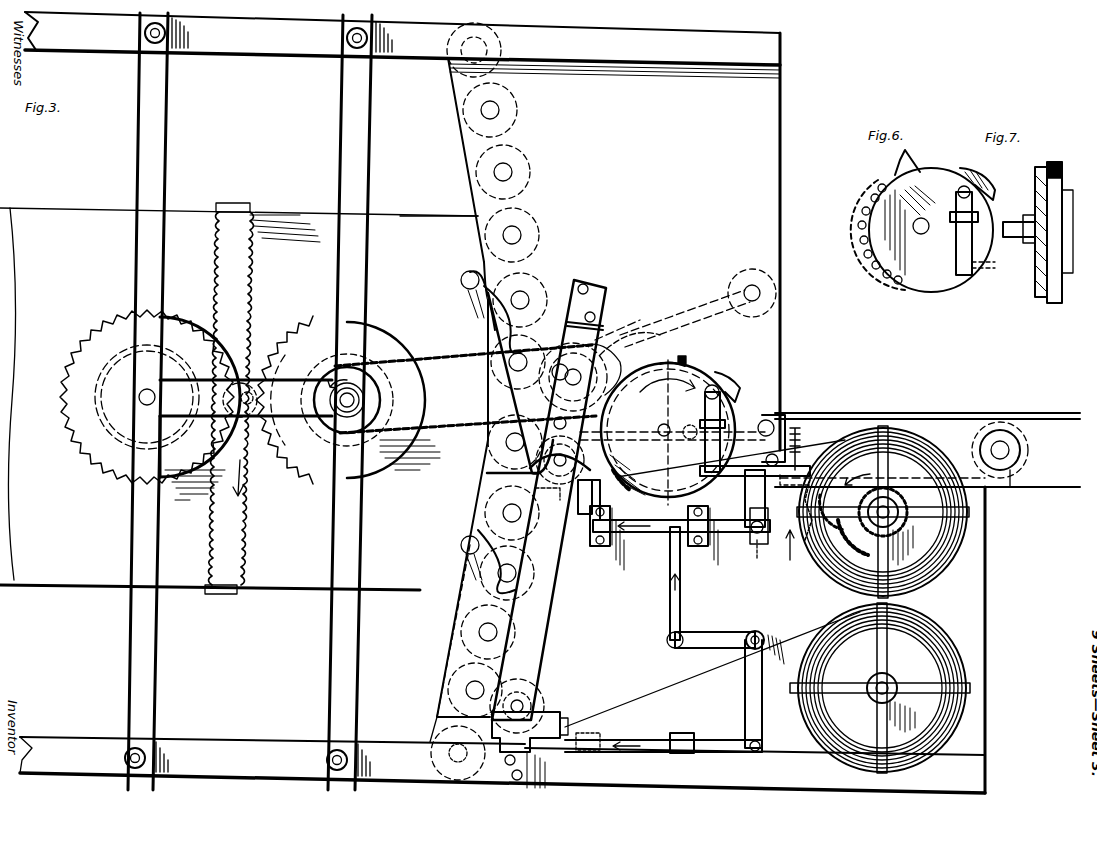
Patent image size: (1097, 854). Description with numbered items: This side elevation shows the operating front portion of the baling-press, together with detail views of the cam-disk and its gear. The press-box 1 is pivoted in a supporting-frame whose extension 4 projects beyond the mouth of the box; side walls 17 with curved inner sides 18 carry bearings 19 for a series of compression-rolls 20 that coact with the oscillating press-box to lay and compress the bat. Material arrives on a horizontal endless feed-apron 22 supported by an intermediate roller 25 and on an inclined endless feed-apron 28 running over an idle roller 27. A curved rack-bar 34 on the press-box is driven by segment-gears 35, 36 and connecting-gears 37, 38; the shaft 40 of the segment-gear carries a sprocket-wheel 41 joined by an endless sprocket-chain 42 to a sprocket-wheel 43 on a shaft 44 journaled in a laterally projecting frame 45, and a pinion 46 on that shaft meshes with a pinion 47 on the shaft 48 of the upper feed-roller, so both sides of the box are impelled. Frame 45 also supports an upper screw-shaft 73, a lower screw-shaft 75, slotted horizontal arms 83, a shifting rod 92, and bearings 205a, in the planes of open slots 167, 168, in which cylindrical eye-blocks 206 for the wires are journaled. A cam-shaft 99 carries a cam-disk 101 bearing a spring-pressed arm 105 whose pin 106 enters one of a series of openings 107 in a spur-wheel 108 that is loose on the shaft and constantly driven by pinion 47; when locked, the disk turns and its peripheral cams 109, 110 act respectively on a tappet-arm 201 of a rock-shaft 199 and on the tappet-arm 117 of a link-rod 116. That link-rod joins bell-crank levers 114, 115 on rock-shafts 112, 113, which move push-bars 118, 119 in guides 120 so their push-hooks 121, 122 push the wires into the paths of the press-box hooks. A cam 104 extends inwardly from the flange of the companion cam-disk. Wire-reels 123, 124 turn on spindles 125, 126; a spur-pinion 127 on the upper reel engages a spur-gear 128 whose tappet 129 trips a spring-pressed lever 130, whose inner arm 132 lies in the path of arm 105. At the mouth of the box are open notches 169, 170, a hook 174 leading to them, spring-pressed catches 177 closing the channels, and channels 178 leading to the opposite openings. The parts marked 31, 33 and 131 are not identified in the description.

In FIG. 3, the press-box 1 is at (492, 402).
In FIG. 3, the extension 4 is at (466, 30).
In FIG. 3, the side walls 17 is at (633, 160).
In FIG. 3, the curved inner sides 18 is at (452, 96).
In FIG. 3, the bearings 19 is at (500, 110).
In FIG. 3, the compression-rolls 20 is at (532, 172).
In FIG. 3, the endless feed-apron 22 is at (918, 414).
In FIG. 3, the intermediate roller 25 is at (1010, 430).
In FIG. 3, the idle roller 27 is at (745, 280).
In FIG. 3, the inclined endless feed-apron 28 is at (708, 296).
In FIG. 3, the frame beam 31 is at (66, 210).
In FIG. 3, the disc 33 is at (172, 350).
In FIG. 3, the curved rack-bar 34 is at (252, 286).
In FIG. 3, the segment-gear 35 is at (312, 338).
In FIG. 3, the segment-gear 36 is at (60, 430).
In FIG. 3, the connecting-gear 37 is at (372, 358).
In FIG. 3, the connecting-gear 38 is at (253, 434).
In FIG. 3, the shaft 40 is at (338, 415).
In FIG. 3, the sprocket-wheel 41 is at (380, 398).
In FIG. 3, the endless sprocket-chain 42 is at (465, 389).
In FIG. 3, the sprocket-wheel 43 is at (560, 352).
In FIG. 3, the shaft 44 is at (552, 398).
In FIG. 3, the frame 45 is at (548, 596).
In FIG. 3, the pinion 46 is at (548, 374).
In FIG. 3, the pinion 47 is at (630, 355).
In FIG. 3, the shaft 48 is at (610, 330).
In FIG. 3, the screw-shaft 73 is at (546, 490).
In FIG. 3, the screw-shaft 75 is at (518, 700).
In FIG. 3, the arms 83 is at (478, 774).
In FIG. 3, the shifting rod 92 is at (528, 450).
In FIG. 3, the cam-shaft 99 is at (666, 436).
In FIG. 6, the cam-shaft 99 is at (924, 234).
In FIG. 7, the cam-shaft 99 is at (1012, 240).
In FIG. 3, the cam-disk 101 is at (672, 432).
In FIG. 6, the cam-disk 101 is at (931, 221).
In FIG. 7, the cam-disk 101 is at (1040, 298).
In FIG. 6, the cam 104 is at (890, 285).
In FIG. 3, the spring-pressed arm 105 is at (700, 425).
In FIG. 6, the spring-pressed arm 105 is at (958, 240).
In FIG. 7, the spring-pressed arm 105 is at (1058, 300).
In FIG. 3, the pin 106 is at (718, 385).
In FIG. 6, the pin 106 is at (960, 190).
In FIG. 7, the pin 106 is at (1062, 185).
In FIG. 6, the openings 107 is at (855, 214).
In FIG. 7, the openings 107 is at (1035, 196).
In FIG. 3, the spur-wheel 108 is at (688, 352).
In FIG. 6, the spur-wheel 108 is at (870, 262).
In FIG. 7, the spur-wheel 108 is at (1035, 278).
In FIG. 3, the cam 109 is at (680, 345).
In FIG. 6, the cam 109 is at (895, 162).
In FIG. 3, the cam 110 is at (740, 398).
In FIG. 6, the cam 110 is at (992, 172).
In FIG. 3, the rock-shaft 112 is at (790, 406).
In FIG. 3, the rock-shaft 113 is at (754, 630).
In FIG. 3, the bell-crank lever 114 is at (768, 420).
In FIG. 3, the bell-crank lever 115 is at (715, 640).
In FIG. 3, the link-rod 116 is at (682, 565).
In FIG. 3, the tappet-arm 117 is at (684, 356).
In FIG. 3, the push-bar 118 is at (650, 540).
In FIG. 3, the push-bar 119 is at (662, 742).
In FIG. 3, the guides 120 is at (700, 766).
In FIG. 3, the push-hook 121 is at (596, 535).
In FIG. 3, the push-hook 122 is at (540, 715).
In FIG. 3, the wire-reel 123 is at (945, 560).
In FIG. 3, the wire-reel 124 is at (950, 650).
In FIG. 3, the spindle 125 is at (905, 506).
In FIG. 3, the spindle 126 is at (895, 680).
In FIG. 3, the spur-pinion 127 is at (872, 538).
In FIG. 3, the spur-gear 128 is at (790, 520).
In FIG. 3, the tappet 129 is at (840, 505).
In FIG. 3, the spring-pressed lever 130 is at (800, 445).
In FIG. 3, the link 131 is at (757, 560).
In FIG. 3, the inner arm 132 is at (718, 480).
In FIG. 3, the open slot 167 is at (487, 478).
In FIG. 3, the open slot 168 is at (440, 720).
In FIG. 3, the open notch 169 is at (470, 272).
In FIG. 3, the open notch 170 is at (460, 538).
In FIG. 3, the hook 174 is at (524, 548).
In FIG. 3, the spring-pressed catches 177 is at (462, 280).
In FIG. 3, the channels 178 is at (528, 270).
In FIG. 3, the rock-shaft 199 is at (545, 427).
In FIG. 3, the tappet-arm 201 is at (659, 430).
In FIG. 3, the bearings 205a is at (548, 745).
In FIG. 3, the cylindrical eye-blocks 206 is at (572, 725).